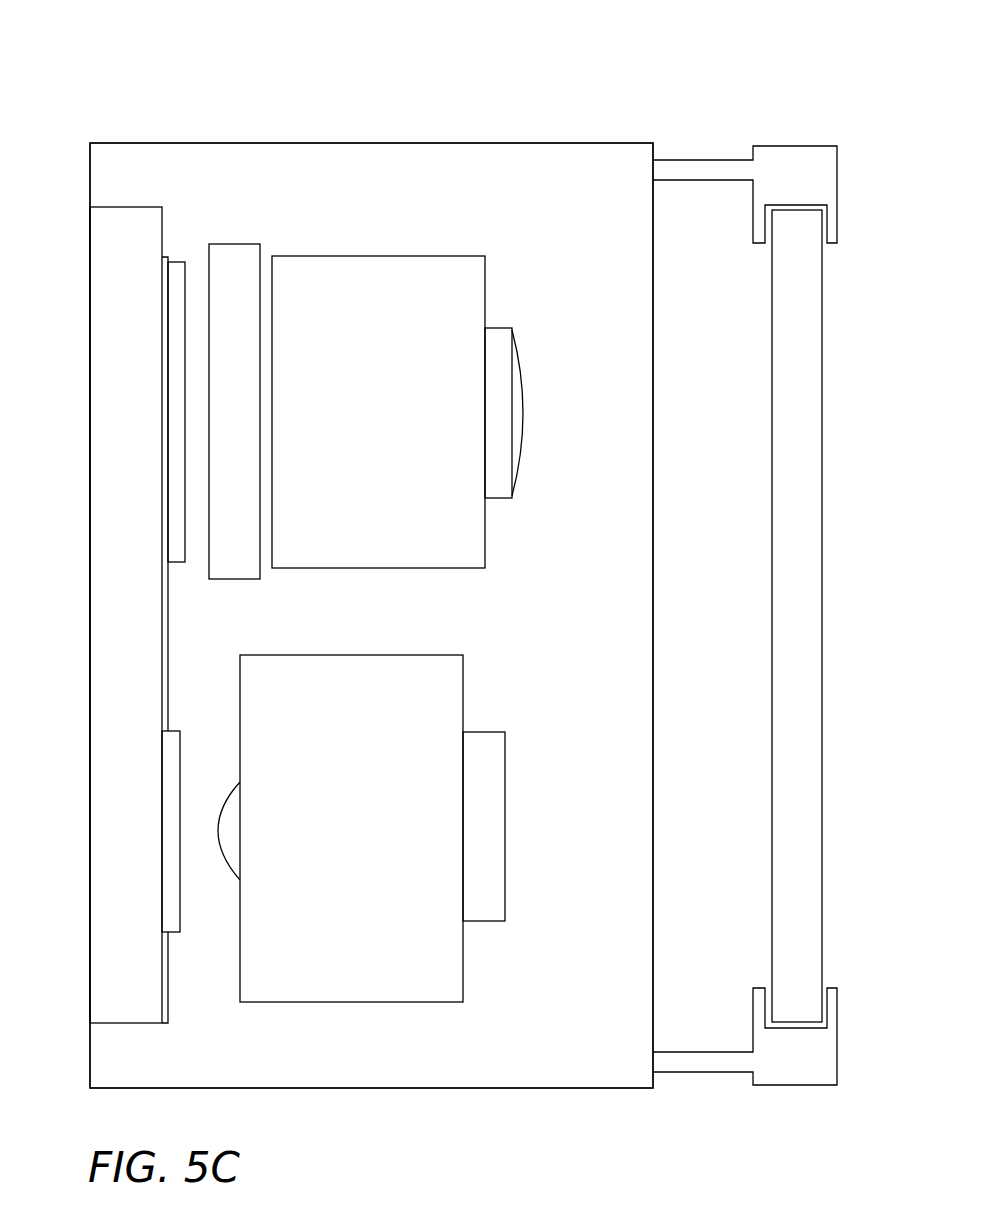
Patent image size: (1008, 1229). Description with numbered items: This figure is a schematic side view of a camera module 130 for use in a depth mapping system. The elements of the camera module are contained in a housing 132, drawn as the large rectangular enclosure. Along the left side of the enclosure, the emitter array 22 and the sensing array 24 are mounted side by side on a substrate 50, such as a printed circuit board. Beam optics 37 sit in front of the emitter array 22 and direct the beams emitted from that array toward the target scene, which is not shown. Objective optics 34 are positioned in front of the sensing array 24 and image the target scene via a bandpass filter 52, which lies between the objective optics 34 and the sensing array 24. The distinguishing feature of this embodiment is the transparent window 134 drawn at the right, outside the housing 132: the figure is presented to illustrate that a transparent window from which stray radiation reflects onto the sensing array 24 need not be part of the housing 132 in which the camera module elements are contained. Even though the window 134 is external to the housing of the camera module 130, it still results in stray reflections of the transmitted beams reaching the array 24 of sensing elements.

The camera module 130 is at (86, 56).
The housing 132 is at (455, 1089).
The transparent window 134 is at (822, 744).
The substrate 50 is at (130, 207).
The sensing array 24 is at (187, 262).
The bandpass filter 52 is at (240, 244).
The objective optics 34 is at (486, 273).
The beam optics 37 is at (463, 688).
The emitter array 22 is at (183, 733).